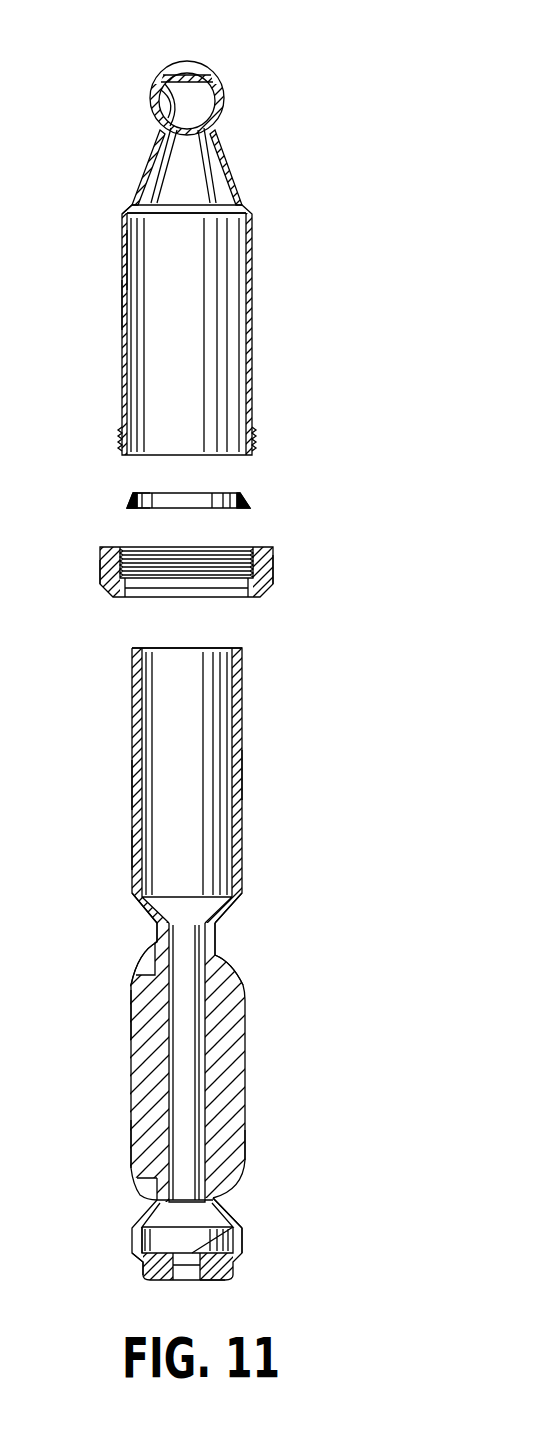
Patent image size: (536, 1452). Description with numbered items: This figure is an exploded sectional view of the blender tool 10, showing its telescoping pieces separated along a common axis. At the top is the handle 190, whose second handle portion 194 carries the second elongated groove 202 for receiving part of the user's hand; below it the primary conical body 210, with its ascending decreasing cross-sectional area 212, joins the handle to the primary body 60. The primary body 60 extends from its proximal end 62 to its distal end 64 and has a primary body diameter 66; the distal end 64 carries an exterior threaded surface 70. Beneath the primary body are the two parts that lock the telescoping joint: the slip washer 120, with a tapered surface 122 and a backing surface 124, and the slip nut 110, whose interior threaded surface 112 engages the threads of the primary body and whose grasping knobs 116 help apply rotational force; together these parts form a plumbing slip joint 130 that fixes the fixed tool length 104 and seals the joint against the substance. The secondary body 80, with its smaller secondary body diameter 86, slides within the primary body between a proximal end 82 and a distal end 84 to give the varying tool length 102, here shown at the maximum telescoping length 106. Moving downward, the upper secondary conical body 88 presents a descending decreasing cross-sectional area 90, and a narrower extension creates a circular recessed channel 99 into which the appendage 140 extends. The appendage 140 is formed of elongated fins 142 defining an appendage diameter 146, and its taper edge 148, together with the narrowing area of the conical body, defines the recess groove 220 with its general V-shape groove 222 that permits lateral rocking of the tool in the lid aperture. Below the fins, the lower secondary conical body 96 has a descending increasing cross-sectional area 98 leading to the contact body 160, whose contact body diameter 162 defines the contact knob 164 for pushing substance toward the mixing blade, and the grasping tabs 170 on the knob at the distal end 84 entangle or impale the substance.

The blender tool 10 is at (167, 70).
The handle 190 is at (187, 62).
The second handle portion 194 is at (200, 100).
The second elongated groove 202 is at (170, 98).
The ascending decreasing cross-sectional area 212 is at (151, 156).
The primary conical body 210 is at (224, 152).
The primary body 60 is at (252, 296).
The proximal end 62 is at (123, 215).
The fixed tool length 104 is at (123, 257).
The primary body diameter 66 is at (122, 307).
The exterior threaded surface 70 is at (119, 430).
The distal end 64 is at (253, 450).
The slip washer 120 is at (240, 496).
The tapered surface 122 is at (132, 500).
The backing surface 124 is at (130, 506).
The slip nut 110 is at (262, 589).
The interior threaded surface 112 is at (239, 548).
The plumbing slip joint 130 is at (100, 567).
The grasping knobs 116 is at (273, 565).
The secondary body 80 is at (243, 822).
The proximal end 82 is at (240, 650).
The secondary body diameter 86 is at (132, 790).
The maximum telescoping length 106 is at (243, 775).
The varying tool length 102 is at (133, 848).
The descending decreasing cross-sectional area 90 is at (147, 917).
The upper secondary conical body 88 is at (228, 915).
The general V-shape groove 222 is at (156, 931).
The circular recessed channel 99 is at (213, 928).
The taper edge 148 is at (133, 978).
The recess groove 220 is at (215, 935).
The appendage 140 is at (246, 1000).
The appendage diameter 146 is at (130, 1010).
The elongated fins 142 is at (130, 1145).
The descending increasing cross-sectional area 98 is at (141, 1211).
The contact body 160 is at (242, 1235).
The lower secondary conical body 96 is at (227, 1210).
The contact knob 164 is at (141, 1246).
The contact body diameter 162 is at (240, 1249).
The distal end 84 is at (135, 1262).
The grasping tabs 170 is at (212, 1282).